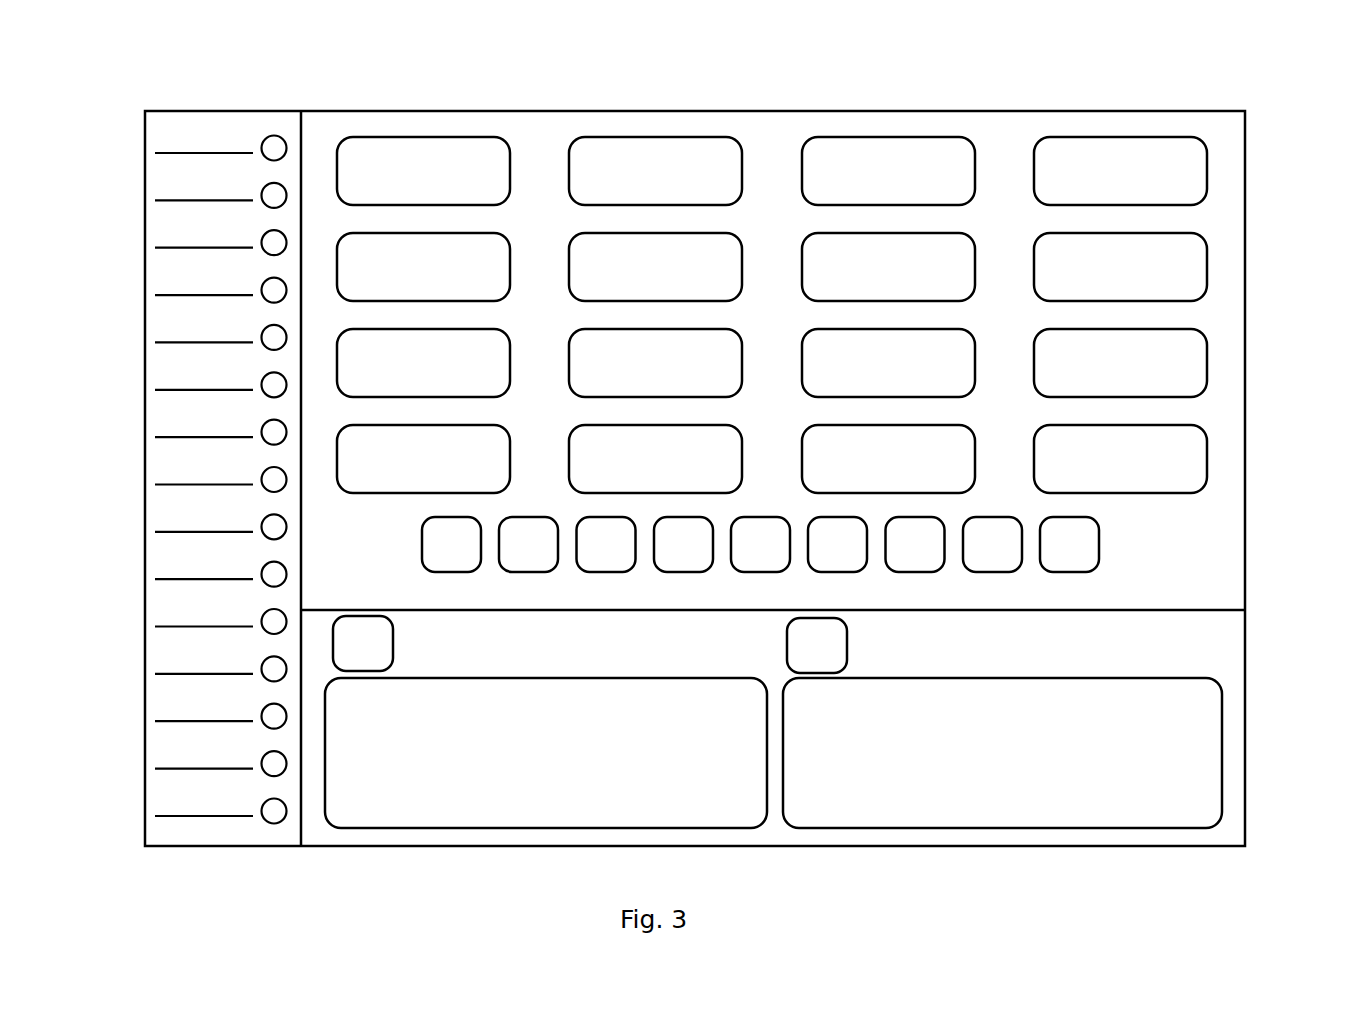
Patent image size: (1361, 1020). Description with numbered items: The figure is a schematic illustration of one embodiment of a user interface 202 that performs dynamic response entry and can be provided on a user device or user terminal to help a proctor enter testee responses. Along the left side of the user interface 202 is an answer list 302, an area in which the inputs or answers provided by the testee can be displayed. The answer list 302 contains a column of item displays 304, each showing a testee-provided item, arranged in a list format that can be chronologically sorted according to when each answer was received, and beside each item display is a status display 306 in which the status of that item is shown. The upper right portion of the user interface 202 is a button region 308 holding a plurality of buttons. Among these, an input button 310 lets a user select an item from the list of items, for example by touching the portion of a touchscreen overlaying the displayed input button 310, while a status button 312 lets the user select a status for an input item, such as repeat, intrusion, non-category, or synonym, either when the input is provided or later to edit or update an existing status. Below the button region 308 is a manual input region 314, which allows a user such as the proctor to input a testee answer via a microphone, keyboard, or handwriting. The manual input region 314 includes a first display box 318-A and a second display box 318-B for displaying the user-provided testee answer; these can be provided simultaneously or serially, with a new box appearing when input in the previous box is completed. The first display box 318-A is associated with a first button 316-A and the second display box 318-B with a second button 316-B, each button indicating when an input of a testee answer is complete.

The user interface 202 is at (1282, 89).
The answer list 302 is at (176, 443).
The item display 304 is at (223, 151).
The status display 306 is at (272, 135).
The button region 308 is at (806, 337).
The input button 310 is at (445, 137).
The status button 312 is at (1099, 548).
The manual input region 314 is at (813, 739).
The first button 316-A is at (394, 652).
The second button 316-B is at (848, 649).
The first display box 318-A is at (400, 829).
The second display box 318-B is at (940, 829).